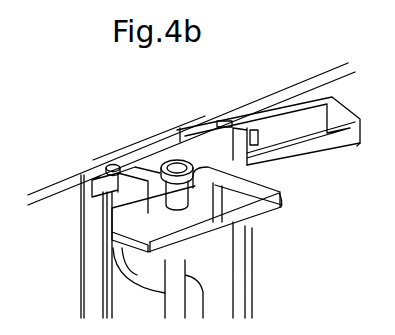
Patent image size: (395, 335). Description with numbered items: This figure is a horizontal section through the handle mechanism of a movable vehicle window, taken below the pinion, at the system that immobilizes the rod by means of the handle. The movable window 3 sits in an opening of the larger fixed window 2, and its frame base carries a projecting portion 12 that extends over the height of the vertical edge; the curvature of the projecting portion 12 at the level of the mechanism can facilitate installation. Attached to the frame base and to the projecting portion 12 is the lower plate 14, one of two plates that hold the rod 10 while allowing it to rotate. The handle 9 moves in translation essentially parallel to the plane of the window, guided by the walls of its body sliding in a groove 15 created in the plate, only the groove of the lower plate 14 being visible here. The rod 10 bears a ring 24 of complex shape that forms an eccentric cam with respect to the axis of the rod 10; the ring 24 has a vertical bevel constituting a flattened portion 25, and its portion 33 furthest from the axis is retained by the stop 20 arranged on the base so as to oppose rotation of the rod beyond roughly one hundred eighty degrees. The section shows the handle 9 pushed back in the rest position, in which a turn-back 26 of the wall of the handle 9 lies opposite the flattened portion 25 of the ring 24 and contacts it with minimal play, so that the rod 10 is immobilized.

The fixed window 2 is at (61, 252).
The movable window 3 is at (346, 277).
The handle 9 is at (318, 160).
The rod 10 is at (175, 299).
The projecting portion 12 is at (135, 266).
The lower plate 14 is at (148, 235).
The groove 15 is at (175, 235).
The stop 20 is at (105, 169).
The ring 24 is at (113, 192).
The flattened portion 25 is at (205, 183).
The turn-back 26 is at (212, 182).
The portion furthest from the axis 33 is at (183, 162).